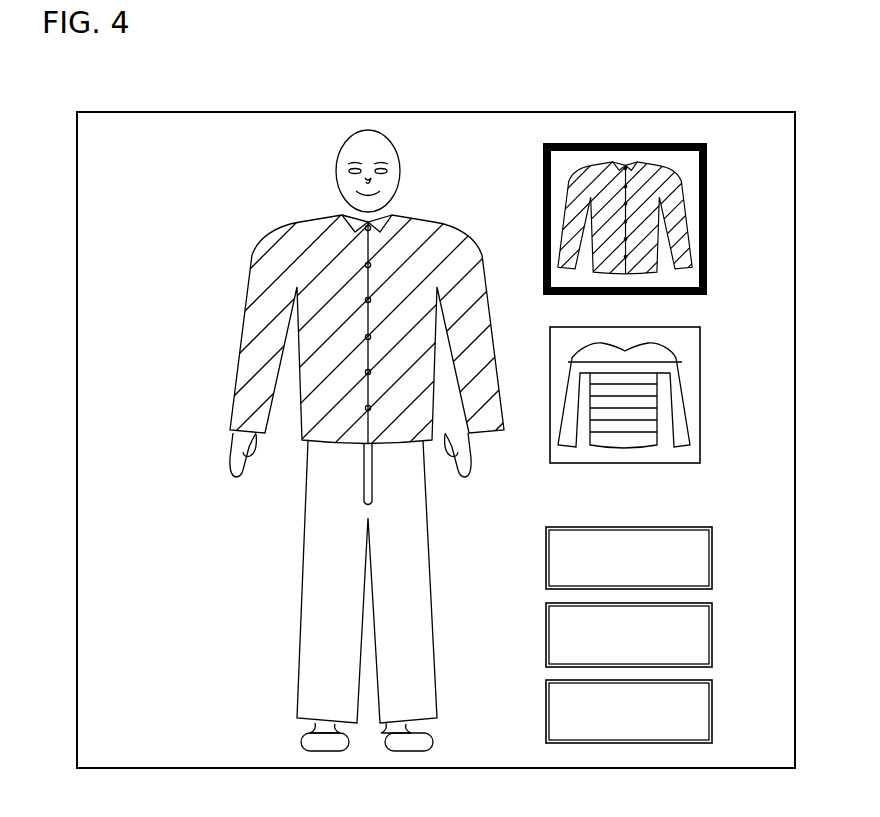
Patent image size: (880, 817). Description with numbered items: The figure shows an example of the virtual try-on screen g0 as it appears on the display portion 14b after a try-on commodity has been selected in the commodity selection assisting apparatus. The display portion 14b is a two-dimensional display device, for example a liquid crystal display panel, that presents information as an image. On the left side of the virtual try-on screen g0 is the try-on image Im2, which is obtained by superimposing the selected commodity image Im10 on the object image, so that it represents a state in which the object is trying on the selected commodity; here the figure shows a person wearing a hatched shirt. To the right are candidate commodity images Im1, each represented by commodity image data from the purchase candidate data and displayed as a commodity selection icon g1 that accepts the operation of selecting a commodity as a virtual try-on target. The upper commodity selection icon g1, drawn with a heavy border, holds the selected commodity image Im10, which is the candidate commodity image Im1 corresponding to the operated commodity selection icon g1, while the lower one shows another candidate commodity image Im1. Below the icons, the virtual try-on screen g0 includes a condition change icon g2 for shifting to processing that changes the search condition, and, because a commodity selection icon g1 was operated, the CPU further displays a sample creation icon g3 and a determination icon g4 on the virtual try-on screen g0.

The display portion 14b is at (737, 110).
The virtual try-on screen g0 is at (178, 130).
The try-on image Im2 is at (277, 200).
The candidate commodity image Im1 is at (557, 350).
The selected commodity image Im10 is at (560, 174).
The commodity selection icon g1 is at (629, 301).
The condition change icon g2 is at (712, 555).
The sample creation icon g3 is at (712, 633).
The determination icon g4 is at (712, 710).